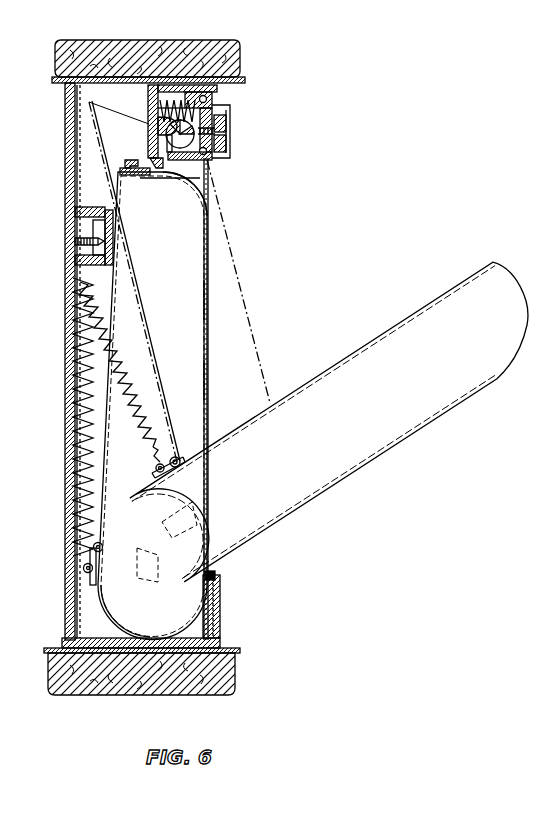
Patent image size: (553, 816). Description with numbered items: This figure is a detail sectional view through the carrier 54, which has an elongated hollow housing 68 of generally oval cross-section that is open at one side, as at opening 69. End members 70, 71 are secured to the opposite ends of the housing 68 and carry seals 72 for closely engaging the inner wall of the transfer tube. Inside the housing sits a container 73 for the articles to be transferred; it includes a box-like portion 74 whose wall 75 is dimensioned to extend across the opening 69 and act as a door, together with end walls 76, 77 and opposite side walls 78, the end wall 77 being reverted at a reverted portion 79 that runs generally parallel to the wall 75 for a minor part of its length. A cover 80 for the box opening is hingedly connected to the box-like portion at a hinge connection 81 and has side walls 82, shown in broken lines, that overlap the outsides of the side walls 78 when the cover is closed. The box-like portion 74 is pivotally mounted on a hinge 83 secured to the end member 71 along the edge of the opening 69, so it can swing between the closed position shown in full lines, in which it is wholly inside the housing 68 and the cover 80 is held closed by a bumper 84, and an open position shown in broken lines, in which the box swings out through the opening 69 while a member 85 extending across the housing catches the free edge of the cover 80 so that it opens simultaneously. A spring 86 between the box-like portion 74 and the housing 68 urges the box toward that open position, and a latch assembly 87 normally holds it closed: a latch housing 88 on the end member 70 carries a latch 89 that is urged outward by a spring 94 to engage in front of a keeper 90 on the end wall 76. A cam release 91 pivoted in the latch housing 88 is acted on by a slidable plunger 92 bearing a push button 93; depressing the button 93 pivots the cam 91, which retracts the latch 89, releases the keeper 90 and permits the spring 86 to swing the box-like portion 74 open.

The carrier 54 is at (263, 237).
The housing 68 is at (76, 197).
The opening 69 is at (209, 181).
The end member 70 is at (66, 108).
The end member 71 is at (65, 607).
The seals 72 is at (242, 62).
The container 73 is at (260, 329).
The box-like portion 74 is at (209, 297).
The wall 75 is at (210, 381).
The end wall 76 is at (175, 182).
The end wall 77 is at (107, 617).
The side walls 78 is at (193, 233).
The reverted portion 79 is at (98, 587).
The cover 80 is at (162, 458).
The hinge connection 81 is at (93, 547).
The side walls of cover 82 is at (222, 260).
The hinge 83 is at (213, 575).
The bumper 84 is at (77, 262).
The member 85 is at (125, 161).
The spring 86 is at (75, 377).
The latch assembly 87 is at (229, 116).
The latch housing 88 is at (222, 104).
The latch 89 is at (150, 147).
The keeper 90 is at (130, 180).
The cam release 91 is at (150, 124).
The plunger 92 is at (228, 142).
The push button 93 is at (228, 124).
The spring 94 is at (147, 104).